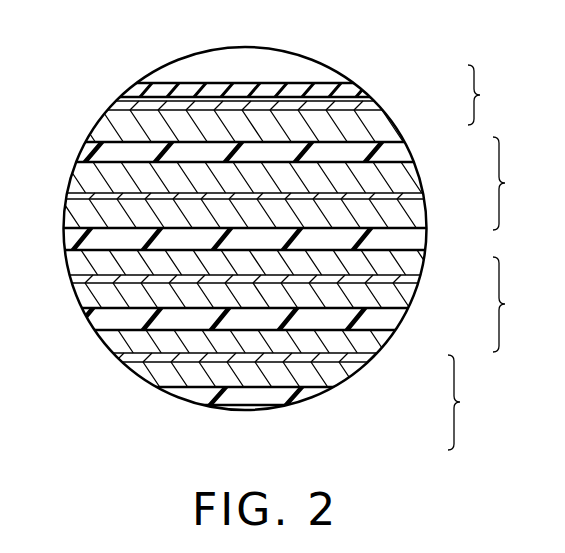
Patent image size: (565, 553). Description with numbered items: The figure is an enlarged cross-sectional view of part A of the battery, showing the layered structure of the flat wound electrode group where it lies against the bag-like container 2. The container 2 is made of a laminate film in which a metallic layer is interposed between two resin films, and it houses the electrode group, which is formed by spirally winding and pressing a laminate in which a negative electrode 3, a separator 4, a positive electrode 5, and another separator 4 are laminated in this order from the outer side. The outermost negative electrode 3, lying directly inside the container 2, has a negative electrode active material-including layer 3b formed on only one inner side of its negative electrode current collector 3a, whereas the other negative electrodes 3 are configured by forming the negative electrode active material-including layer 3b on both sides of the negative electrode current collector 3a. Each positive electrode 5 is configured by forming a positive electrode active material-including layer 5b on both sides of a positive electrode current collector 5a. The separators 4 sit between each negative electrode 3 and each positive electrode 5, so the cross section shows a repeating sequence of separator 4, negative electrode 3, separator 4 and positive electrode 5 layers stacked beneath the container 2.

The part A is at (160, 77).
The bag-like container 2 is at (350, 93).
The negative electrode 3 is at (294, 208).
The negative electrode current collector 3a is at (383, 112).
The negative electrode active material-including layer 3b is at (400, 131).
The separator 4 is at (82, 154).
The positive electrode 5 is at (294, 293).
The positive electrode current collector 5a is at (407, 197).
The positive electrode active material-including layer 5b is at (420, 169).